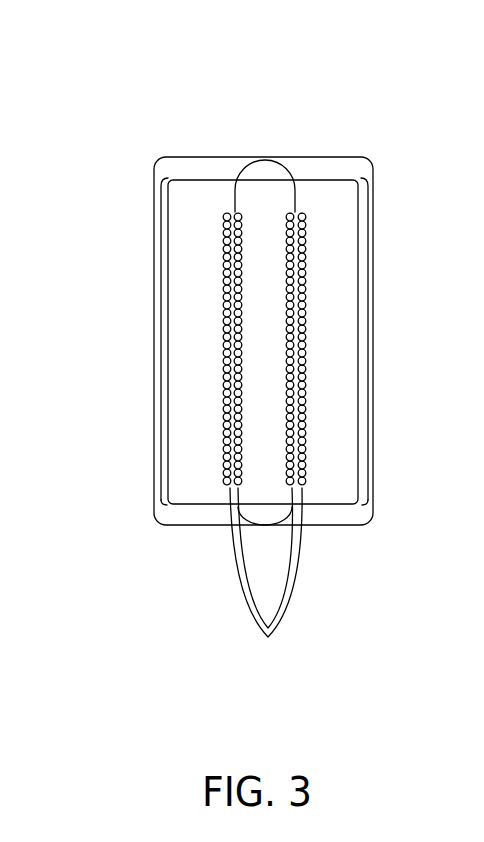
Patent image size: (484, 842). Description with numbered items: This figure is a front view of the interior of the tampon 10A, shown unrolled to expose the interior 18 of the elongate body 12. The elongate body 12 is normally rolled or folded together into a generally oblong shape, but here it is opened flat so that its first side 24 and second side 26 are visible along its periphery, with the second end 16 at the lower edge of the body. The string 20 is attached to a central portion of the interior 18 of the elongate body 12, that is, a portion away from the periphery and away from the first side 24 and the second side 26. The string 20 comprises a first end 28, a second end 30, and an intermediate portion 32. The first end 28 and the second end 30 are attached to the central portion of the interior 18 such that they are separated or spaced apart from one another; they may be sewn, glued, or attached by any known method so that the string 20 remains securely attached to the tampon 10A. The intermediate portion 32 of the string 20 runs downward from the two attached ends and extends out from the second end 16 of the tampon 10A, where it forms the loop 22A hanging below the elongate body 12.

The tampon 10A is at (306, 82).
The elongate body 12 is at (143, 372).
The second end 16 is at (208, 512).
The interior 18 is at (327, 342).
The string 20 is at (297, 555).
The loop 22A is at (312, 605).
The first side 24 is at (373, 242).
The second side 26 is at (155, 270).
The first end 28 is at (298, 212).
The second end 30 is at (227, 212).
The intermediate portion 32 is at (240, 567).